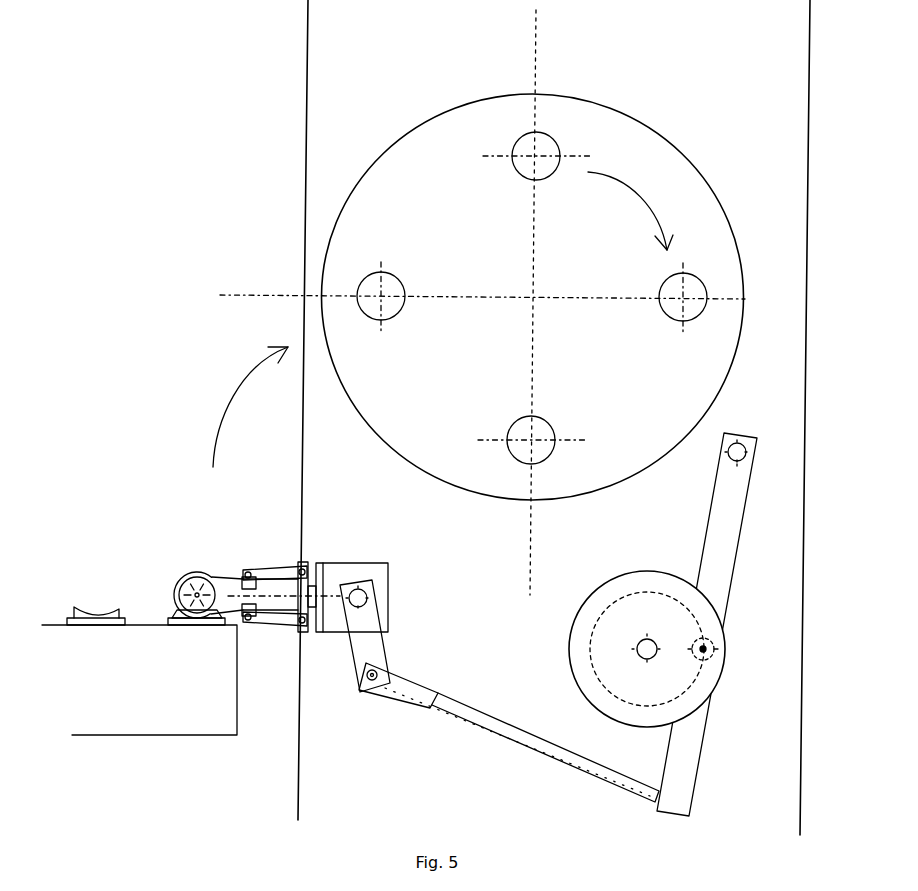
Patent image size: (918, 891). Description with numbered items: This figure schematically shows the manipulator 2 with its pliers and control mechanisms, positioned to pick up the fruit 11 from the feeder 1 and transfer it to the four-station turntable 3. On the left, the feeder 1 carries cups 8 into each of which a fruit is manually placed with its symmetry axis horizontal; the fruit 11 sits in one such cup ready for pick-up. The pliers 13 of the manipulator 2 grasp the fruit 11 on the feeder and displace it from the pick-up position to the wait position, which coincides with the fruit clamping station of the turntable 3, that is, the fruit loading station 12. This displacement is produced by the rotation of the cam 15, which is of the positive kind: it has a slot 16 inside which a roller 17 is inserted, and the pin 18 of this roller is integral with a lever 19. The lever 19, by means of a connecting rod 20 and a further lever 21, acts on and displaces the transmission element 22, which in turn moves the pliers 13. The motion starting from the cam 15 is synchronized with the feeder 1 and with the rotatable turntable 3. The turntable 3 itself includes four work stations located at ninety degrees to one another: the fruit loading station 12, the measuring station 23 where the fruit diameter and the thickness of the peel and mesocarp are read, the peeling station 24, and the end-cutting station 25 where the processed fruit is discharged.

The feeder 1 is at (105, 732).
The manipulator 2 is at (399, 712).
The turntable 3 is at (623, 117).
The cup 8 is at (73, 607).
The fruit 11 is at (178, 581).
The fruit loading station 12 is at (352, 285).
The pliers 13 is at (210, 570).
The cam 15 is at (675, 670).
The slot 16 is at (678, 697).
The roller 17 is at (707, 658).
The pin 18 is at (708, 645).
The lever 19 is at (733, 579).
The connecting rod 20 is at (521, 748).
The lever 21 is at (385, 646).
The transmission element 22 is at (388, 576).
The measuring station 23 is at (547, 128).
The peeling station 24 is at (706, 273).
The end-cutting station 25 is at (523, 472).